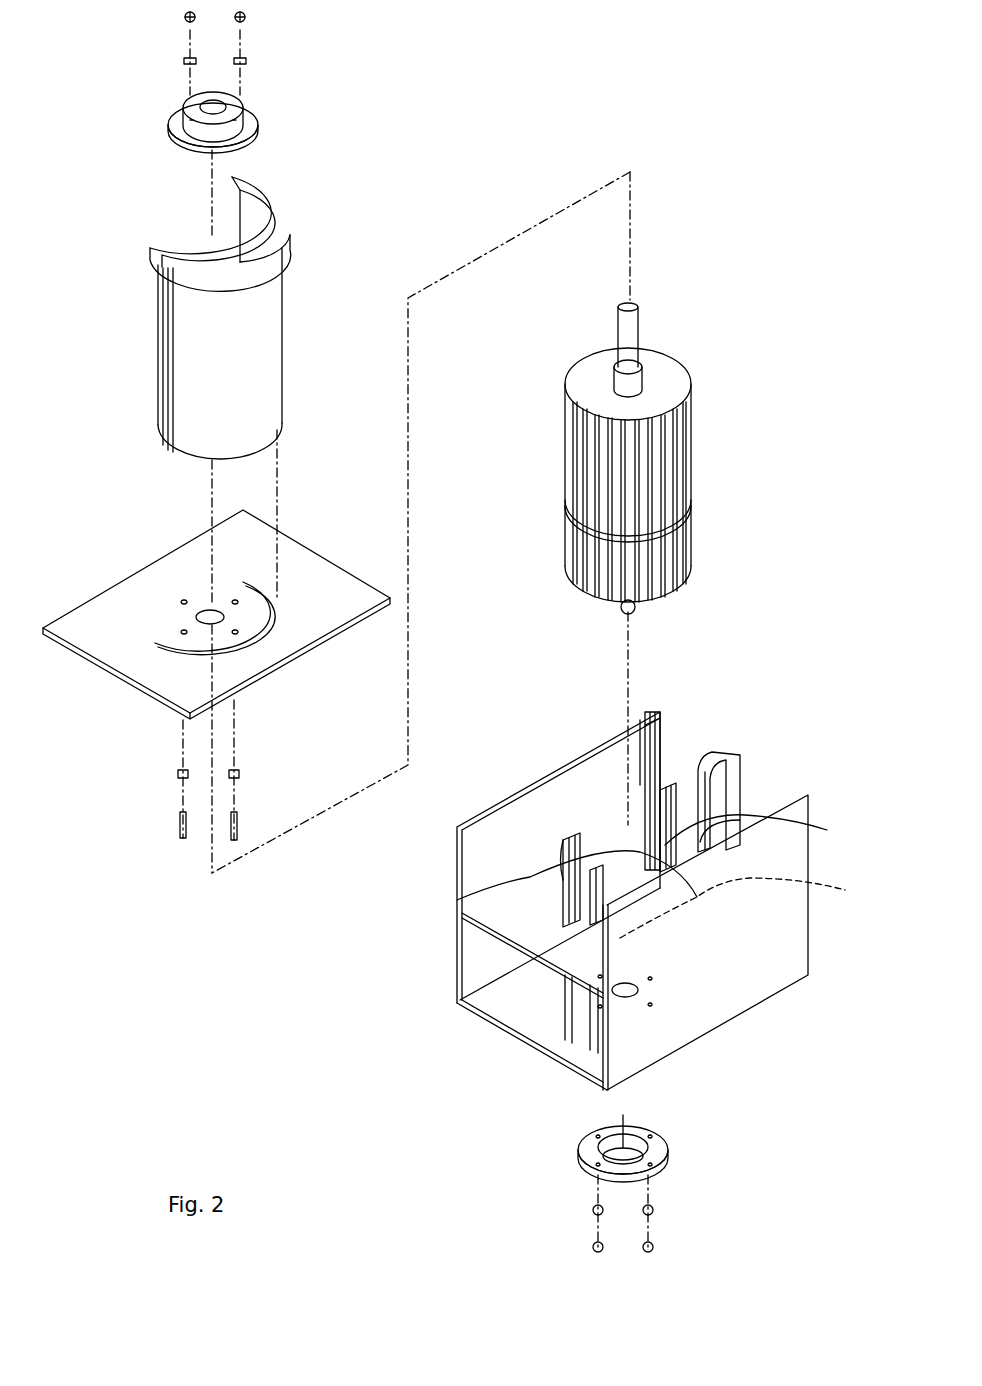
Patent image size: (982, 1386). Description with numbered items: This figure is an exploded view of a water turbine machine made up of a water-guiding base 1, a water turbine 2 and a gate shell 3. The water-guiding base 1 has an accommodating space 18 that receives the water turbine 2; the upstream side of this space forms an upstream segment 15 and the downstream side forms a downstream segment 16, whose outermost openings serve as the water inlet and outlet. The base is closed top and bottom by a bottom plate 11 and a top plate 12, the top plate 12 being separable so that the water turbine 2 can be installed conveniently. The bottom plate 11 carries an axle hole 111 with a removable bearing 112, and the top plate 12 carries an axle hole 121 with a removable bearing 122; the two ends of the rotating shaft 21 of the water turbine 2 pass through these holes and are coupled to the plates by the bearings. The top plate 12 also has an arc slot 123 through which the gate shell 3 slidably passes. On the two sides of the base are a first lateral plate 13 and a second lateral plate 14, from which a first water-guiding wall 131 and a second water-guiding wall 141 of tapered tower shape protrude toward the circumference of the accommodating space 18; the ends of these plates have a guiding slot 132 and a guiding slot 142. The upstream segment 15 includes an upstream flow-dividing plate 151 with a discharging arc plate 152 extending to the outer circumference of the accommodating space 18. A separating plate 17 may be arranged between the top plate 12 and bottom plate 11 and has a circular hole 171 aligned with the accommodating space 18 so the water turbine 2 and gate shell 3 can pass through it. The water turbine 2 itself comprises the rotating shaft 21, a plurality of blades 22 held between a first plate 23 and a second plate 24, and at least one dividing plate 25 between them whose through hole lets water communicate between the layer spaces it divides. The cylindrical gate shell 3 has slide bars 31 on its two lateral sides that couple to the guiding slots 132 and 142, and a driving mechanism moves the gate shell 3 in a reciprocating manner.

The water-guiding base 1 is at (605, 904).
The water turbine 2 is at (607, 453).
The gate shell 3 is at (242, 338).
The bottom plate 11 is at (540, 1022).
The top plate 12 is at (285, 650).
The first lateral plate 13 is at (478, 965).
The second lateral plate 14 is at (758, 985).
The upstream segment 15 is at (770, 777).
The downstream segment 16 is at (523, 1007).
The separating plate 17 is at (487, 908).
The accommodating space 18 is at (604, 832).
The rotating shaft 21 is at (624, 343).
The blades 22 is at (672, 430).
The first plate 23 is at (678, 370).
The second plate 24 is at (680, 583).
The dividing plate 25 is at (690, 513).
The slide bars 31 is at (160, 432).
The axle hole 111 is at (630, 1000).
The bearing 112 is at (585, 1147).
The axle hole 121 is at (208, 608).
The bearing 122 is at (190, 118).
The arc slot 123 is at (172, 643).
The first water-guiding wall 131 is at (645, 730).
The guiding slot 132 is at (665, 787).
The second water-guiding wall 141 is at (560, 878).
The guiding slot 142 is at (573, 840).
The upstream flow-dividing plate 151 is at (738, 760).
The discharging arc plate 152 is at (792, 818).
The circular hole 171 is at (805, 880).